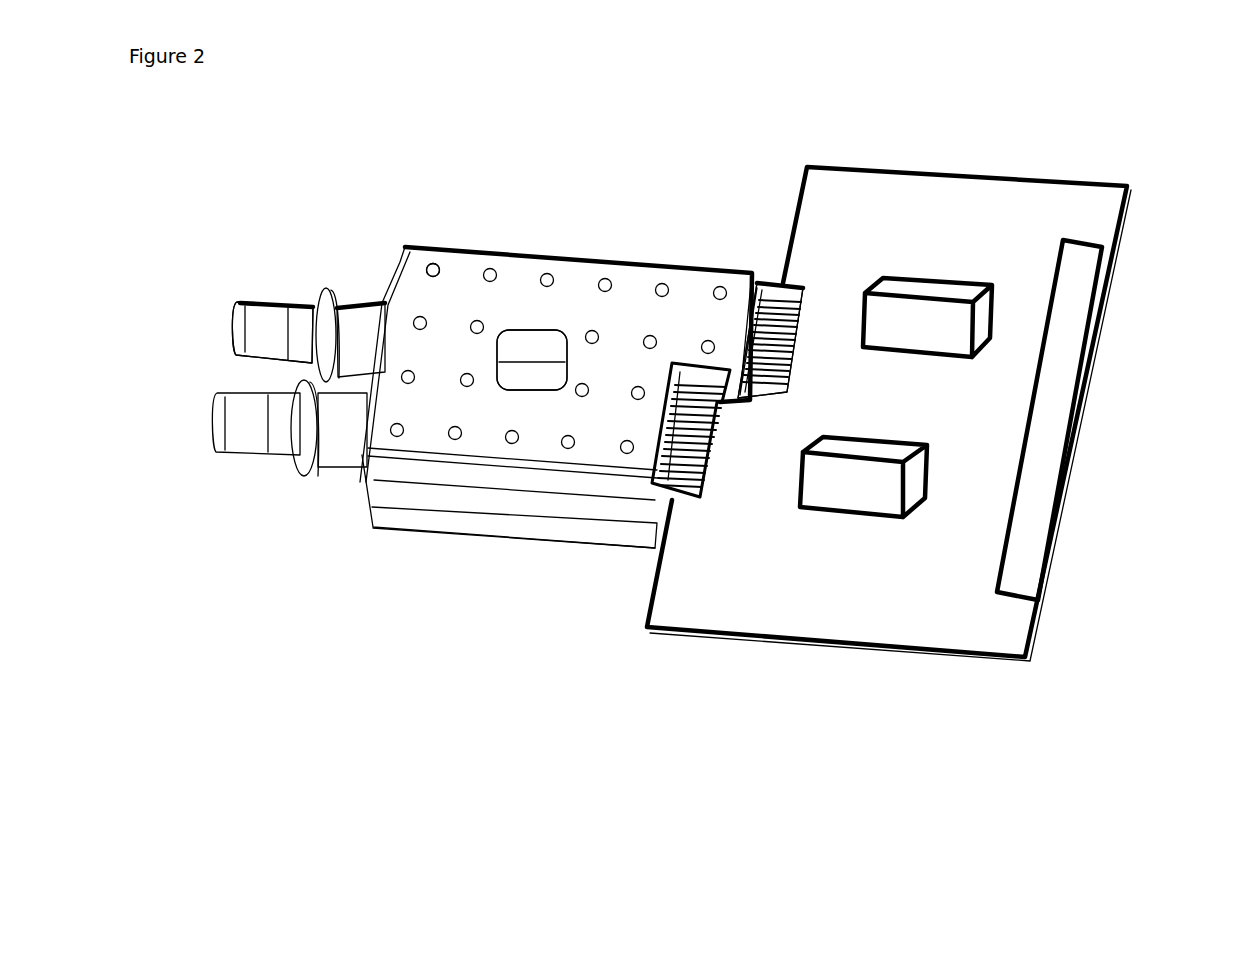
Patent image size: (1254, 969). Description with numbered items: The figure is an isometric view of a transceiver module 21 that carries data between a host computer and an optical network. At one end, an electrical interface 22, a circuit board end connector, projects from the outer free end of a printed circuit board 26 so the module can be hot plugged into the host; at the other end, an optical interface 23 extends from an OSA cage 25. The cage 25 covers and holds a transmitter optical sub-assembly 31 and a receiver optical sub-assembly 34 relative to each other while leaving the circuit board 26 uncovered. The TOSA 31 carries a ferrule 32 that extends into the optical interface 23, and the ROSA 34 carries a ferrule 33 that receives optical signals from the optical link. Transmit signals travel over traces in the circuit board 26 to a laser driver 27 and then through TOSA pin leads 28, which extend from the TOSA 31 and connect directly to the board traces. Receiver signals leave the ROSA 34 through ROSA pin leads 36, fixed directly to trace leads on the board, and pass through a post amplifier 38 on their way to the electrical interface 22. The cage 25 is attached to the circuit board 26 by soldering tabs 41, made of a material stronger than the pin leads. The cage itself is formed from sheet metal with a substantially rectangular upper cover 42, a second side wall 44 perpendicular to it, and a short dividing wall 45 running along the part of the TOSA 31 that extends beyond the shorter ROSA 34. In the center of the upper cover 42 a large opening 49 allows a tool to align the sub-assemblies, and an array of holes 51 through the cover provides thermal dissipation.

The transceiver module 21 is at (578, 135).
The electrical interface 22 is at (1090, 288).
The optical interface 23 is at (230, 365).
The OSA cage 25 is at (363, 487).
The printed circuit board 26 is at (938, 615).
The laser driver 27 is at (919, 280).
The TOSA pin leads 28 is at (799, 333).
The transmitter optical sub-assembly 31 is at (530, 335).
The ferrule 32 is at (272, 298).
The ferrule 33 is at (212, 437).
The receiver optical sub-assembly 34 is at (513, 540).
The ROSA pin leads 36 is at (714, 459).
The post amplifier 38 is at (836, 517).
The soldering tabs 41 is at (805, 281).
The upper cover 42 is at (640, 327).
The second side wall 44 is at (437, 490).
The dividing wall 45 is at (699, 378).
The opening 49 is at (556, 330).
The holes 51 is at (424, 268).